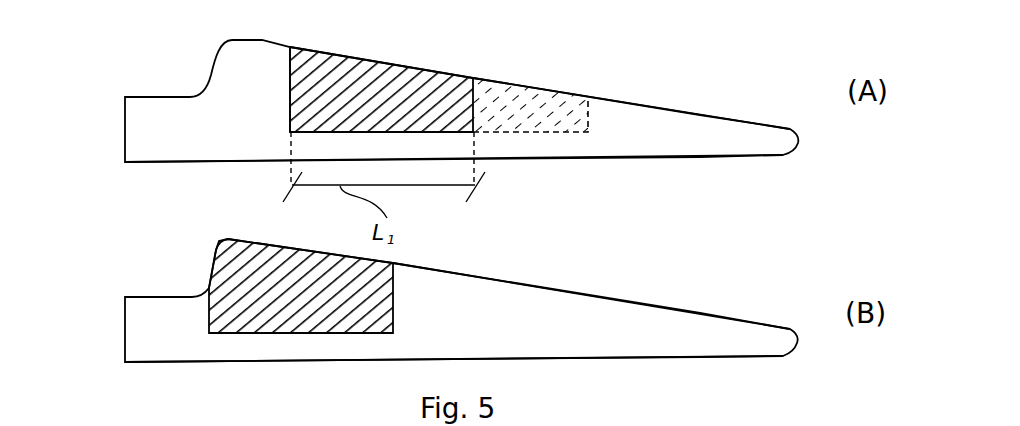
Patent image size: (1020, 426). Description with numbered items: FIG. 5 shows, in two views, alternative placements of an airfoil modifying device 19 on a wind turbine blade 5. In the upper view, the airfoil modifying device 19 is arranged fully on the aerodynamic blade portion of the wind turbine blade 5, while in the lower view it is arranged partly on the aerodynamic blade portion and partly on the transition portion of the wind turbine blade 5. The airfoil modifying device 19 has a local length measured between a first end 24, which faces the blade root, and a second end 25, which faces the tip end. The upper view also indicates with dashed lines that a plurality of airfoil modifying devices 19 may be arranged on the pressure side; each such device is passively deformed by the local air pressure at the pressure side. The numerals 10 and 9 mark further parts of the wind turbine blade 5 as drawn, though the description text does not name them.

The wind turbine blade 5 is at (178, 70).
The first end 24 is at (289, 77).
The airfoil modifying device 19 is at (430, 90).
The second end 25 is at (475, 110).
The upper surface 10 is at (630, 100).
The lower surface 9 is at (703, 157).